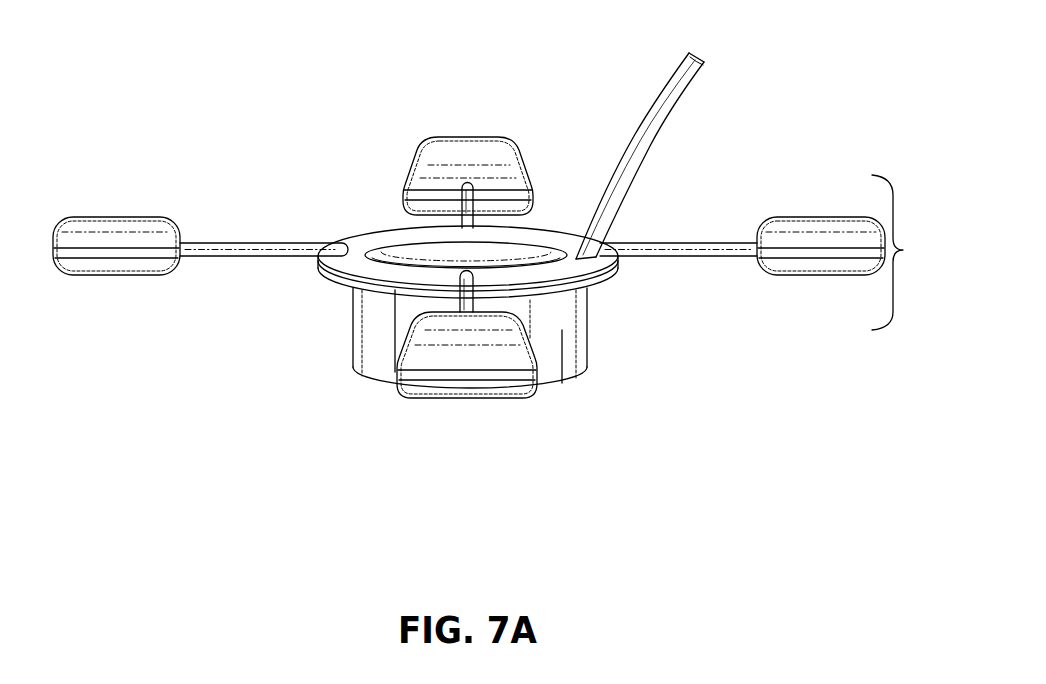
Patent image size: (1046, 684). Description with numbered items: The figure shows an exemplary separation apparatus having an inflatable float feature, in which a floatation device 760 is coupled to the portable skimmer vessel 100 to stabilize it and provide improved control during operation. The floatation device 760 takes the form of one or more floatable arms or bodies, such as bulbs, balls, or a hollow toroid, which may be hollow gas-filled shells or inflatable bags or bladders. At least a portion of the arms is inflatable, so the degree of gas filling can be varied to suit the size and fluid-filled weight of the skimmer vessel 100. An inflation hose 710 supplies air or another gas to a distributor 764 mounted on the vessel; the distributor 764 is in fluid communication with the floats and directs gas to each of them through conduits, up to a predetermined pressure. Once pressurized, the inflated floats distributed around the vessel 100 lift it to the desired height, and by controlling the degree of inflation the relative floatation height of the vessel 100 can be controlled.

The skimmer vessel 100 is at (585, 328).
The inflation hose 710 is at (705, 56).
The floatation device 760 is at (909, 252).
The distributor 764 is at (602, 278).